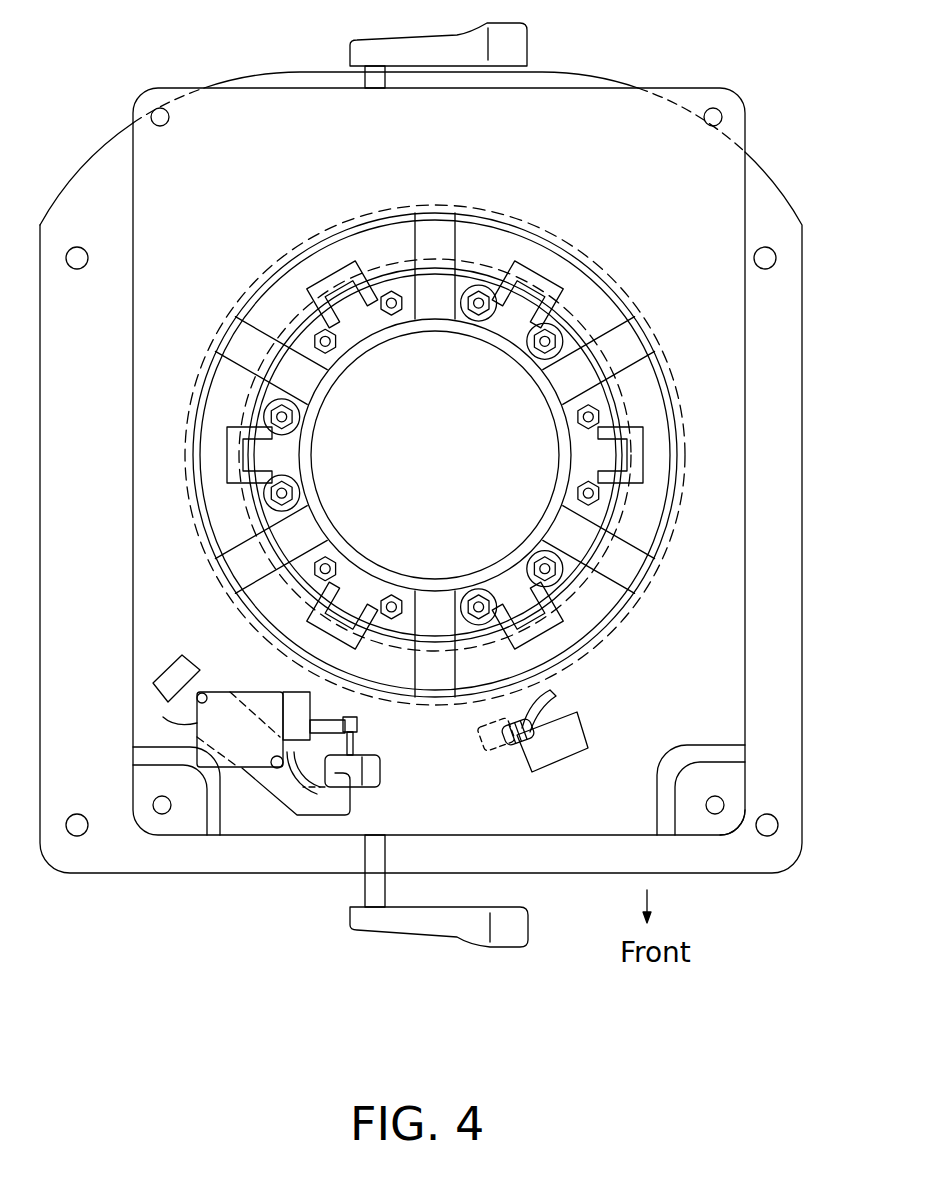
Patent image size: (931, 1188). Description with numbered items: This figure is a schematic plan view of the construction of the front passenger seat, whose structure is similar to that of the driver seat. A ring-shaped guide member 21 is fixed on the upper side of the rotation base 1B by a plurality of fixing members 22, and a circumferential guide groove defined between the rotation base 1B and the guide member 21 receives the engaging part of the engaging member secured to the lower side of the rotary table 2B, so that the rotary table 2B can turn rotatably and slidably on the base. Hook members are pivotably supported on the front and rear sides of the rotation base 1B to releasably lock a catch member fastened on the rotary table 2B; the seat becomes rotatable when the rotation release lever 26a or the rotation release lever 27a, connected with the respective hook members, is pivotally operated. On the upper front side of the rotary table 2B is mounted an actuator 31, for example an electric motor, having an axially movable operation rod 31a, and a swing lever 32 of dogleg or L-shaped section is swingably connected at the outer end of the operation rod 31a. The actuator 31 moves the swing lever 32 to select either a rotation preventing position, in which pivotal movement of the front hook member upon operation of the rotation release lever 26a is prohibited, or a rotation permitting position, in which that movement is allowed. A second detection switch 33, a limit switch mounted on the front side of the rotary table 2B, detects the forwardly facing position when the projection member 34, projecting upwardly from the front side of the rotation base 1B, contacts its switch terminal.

The rotation base 1B is at (193, 862).
The rotary table 2B is at (245, 130).
The rotation release lever 27a is at (512, 45).
The rotation release lever 26a is at (403, 947).
The ring-shaped guide member 21 is at (362, 323).
The fixing members 22 is at (328, 365).
The actuator 31 is at (298, 695).
The operation rod 31a is at (355, 715).
The swing lever 32 is at (355, 768).
The second detection switch 33 is at (566, 705).
The projection member 34 is at (480, 735).